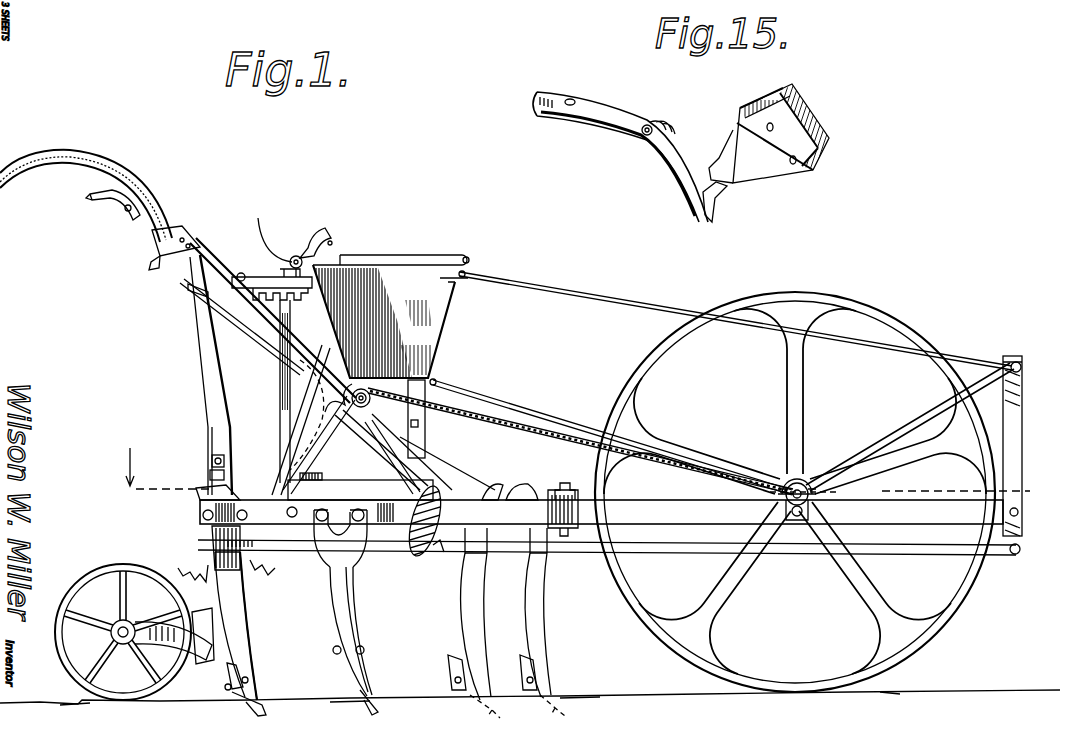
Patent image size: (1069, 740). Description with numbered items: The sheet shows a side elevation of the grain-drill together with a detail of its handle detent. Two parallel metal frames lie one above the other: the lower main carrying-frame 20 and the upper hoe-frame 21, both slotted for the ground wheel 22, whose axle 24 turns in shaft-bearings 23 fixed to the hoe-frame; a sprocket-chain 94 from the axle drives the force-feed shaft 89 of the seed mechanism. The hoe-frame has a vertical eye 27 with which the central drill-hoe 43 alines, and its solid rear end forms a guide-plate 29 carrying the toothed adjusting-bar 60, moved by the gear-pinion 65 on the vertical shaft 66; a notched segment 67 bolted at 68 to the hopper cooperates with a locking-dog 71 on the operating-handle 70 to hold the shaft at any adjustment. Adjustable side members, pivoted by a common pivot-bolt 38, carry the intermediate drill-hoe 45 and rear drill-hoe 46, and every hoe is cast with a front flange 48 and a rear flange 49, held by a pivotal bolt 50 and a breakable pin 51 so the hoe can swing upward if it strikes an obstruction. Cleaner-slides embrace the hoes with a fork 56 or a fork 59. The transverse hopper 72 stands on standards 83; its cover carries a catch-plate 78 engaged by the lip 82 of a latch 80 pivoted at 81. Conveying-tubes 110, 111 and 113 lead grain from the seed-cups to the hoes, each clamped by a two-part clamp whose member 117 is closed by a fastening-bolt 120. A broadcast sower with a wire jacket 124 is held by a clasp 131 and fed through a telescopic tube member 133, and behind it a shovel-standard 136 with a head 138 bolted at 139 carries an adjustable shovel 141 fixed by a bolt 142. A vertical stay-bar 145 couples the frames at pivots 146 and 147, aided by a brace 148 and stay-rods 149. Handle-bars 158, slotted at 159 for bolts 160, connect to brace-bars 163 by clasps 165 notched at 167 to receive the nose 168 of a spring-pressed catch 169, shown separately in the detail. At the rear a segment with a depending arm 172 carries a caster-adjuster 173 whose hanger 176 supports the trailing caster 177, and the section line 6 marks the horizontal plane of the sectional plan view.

In FIG. 1, the section line 6 is at (576, 474).
In FIG. 1, the main carrying-frame 20 is at (668, 549).
In FIG. 1, the hoe-frame 21 is at (708, 512).
In FIG. 1, the ground wheel 22 is at (838, 296).
In FIG. 1, the shaft-bearings 23 is at (803, 484).
In FIG. 1, the axle 24 is at (790, 520).
In FIG. 1, the vertical eye 27 is at (578, 530).
In FIG. 1, the guide-plate 29 is at (284, 476).
In FIG. 1, the pivot-bolt 38 is at (568, 480).
In FIG. 1, the central drill-hoe 43 is at (538, 613).
In FIG. 1, the intermediate drill-hoe 45 is at (458, 636).
In FIG. 1, the rear drill-hoe 46 is at (240, 608).
In FIG. 1, the front flange 48 is at (601, 520).
In FIG. 1, the rear flange 49 is at (293, 257).
In FIG. 1, the pivotal bolt 50 is at (203, 514).
In FIG. 1, the breakable pin 51 is at (244, 510).
In FIG. 1, the fork 56 is at (474, 623).
In FIG. 1, the fork 59 is at (226, 557).
In FIG. 1, the adjusting-bar 60 is at (360, 485).
In FIG. 1, the adjusting gear-pinion 65 is at (313, 480).
In FIG. 1, the vertical shaft 66 is at (298, 391).
In FIG. 1, the segment 67 is at (262, 312).
In FIG. 1, the bolt 68 is at (318, 303).
In FIG. 1, the operating-handle 70 is at (262, 275).
In FIG. 1, the locking-dog 71 is at (204, 296).
In FIG. 1, the transverse hopper 72 is at (392, 282).
In FIG. 1, the catch-plate 78 is at (330, 252).
In FIG. 1, the latch 80 is at (322, 228).
In FIG. 1, the pivot 81 is at (274, 230).
In FIG. 1, the lip 82 is at (332, 240).
In FIG. 1, the standards 83 is at (426, 447).
In FIG. 1, the force-feed shaft 89 is at (352, 392).
In FIG. 1, the sprocket-chain 94 is at (514, 424).
In FIG. 1, the conveying-tube 110 is at (464, 476).
In FIG. 1, the conveying-tube 111 is at (403, 440).
In FIG. 1, the conveying-tube 113 is at (378, 440).
In FIG. 1, the clamp member 117 is at (196, 495).
In FIG. 1, the fastening-bolt 120 is at (496, 484).
In FIG. 1, the metallic jacket 124 is at (440, 556).
In FIG. 1, the clasp 131 is at (422, 558).
In FIG. 1, the telescopic tube member 133 is at (392, 457).
In FIG. 1, the shovel-standard 136 is at (349, 641).
In FIG. 1, the head 138 is at (334, 549).
In FIG. 1, the bolt 139 is at (378, 562).
In FIG. 1, the adjustable shovel 141 is at (360, 612).
In FIG. 1, the bolt 142 is at (365, 651).
In FIG. 1, the stay-bar 145 is at (1022, 422).
In FIG. 1, the pivot 146 is at (1019, 511).
In FIG. 1, the pivot 147 is at (1015, 554).
In FIG. 1, the stay brace 148 is at (936, 400).
In FIG. 1, the stay-rods 149 is at (608, 302).
In FIG. 1, the operating-handles 158 is at (200, 344).
In FIG. 1, the slot 159 is at (212, 460).
In FIG. 1, the bolt 160 is at (210, 475).
In FIG. 1, the brace-bars 163 is at (285, 334).
In FIG. 1, the clasps 165 is at (192, 240).
In FIG. 15, the clasps 165 is at (822, 117).
In FIG. 15, the notch 167 is at (728, 183).
In FIG. 1, the nose 168 is at (155, 262).
In FIG. 15, the nose 168 is at (712, 216).
In FIG. 1, the spring-pressed catch 169 is at (110, 205).
In FIG. 15, the spring-pressed catch 169 is at (650, 150).
In FIG. 1, the depending arm 172 is at (185, 562).
In FIG. 1, the caster-adjuster 173 is at (212, 636).
In FIG. 1, the hanger 176 is at (150, 622).
In FIG. 1, the trailing wheel 177 is at (104, 572).